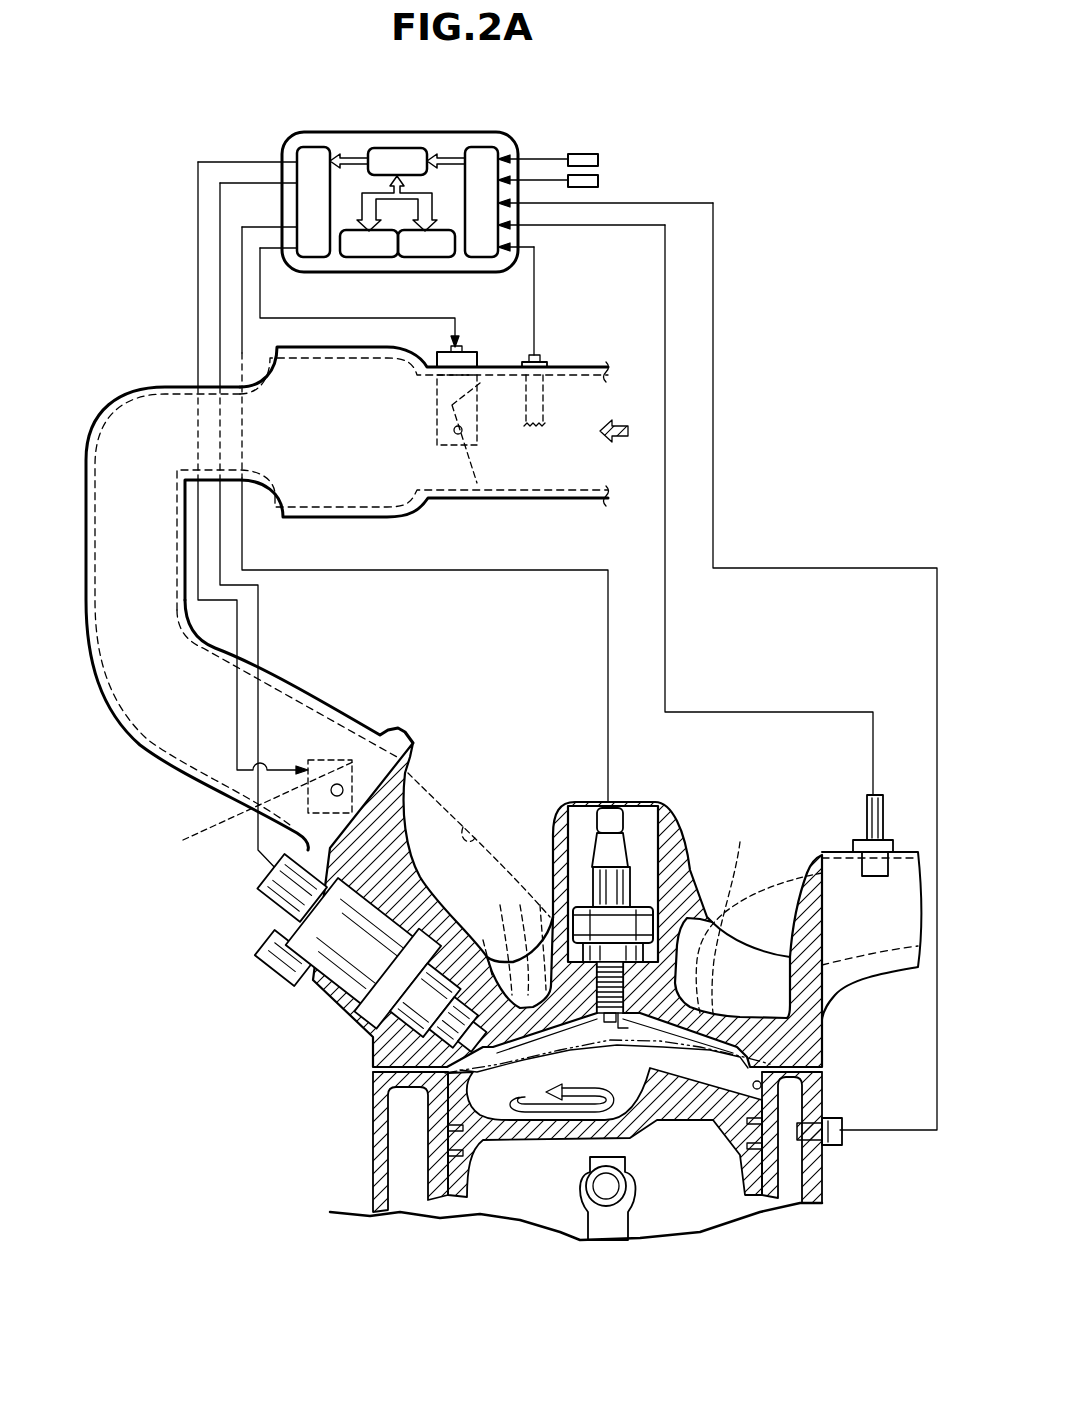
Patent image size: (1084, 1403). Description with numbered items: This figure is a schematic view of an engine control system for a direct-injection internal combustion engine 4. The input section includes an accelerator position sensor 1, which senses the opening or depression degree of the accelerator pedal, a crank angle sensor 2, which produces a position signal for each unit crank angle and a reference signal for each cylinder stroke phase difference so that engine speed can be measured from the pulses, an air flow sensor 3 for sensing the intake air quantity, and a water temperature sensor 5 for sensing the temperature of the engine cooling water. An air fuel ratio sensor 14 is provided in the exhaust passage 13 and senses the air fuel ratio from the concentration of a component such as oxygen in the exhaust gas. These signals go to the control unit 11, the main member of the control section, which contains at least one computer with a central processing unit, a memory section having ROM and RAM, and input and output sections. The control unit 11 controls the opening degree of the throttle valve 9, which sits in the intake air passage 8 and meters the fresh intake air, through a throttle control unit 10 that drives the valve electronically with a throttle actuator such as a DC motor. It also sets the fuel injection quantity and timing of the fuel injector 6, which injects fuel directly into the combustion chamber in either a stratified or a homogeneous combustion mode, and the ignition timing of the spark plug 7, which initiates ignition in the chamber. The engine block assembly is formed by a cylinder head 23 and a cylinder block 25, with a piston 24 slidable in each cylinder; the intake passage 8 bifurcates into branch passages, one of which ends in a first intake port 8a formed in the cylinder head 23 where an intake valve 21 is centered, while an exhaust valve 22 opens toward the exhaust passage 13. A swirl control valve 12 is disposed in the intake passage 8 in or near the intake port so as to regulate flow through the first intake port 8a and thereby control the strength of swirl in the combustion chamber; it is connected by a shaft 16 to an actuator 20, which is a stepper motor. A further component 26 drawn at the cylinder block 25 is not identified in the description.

The accelerator position sensor 1 is at (598, 160).
The crank angle sensor 2 is at (598, 181).
The air flow sensor 3 is at (548, 388).
The internal combustion engine 4 is at (360, 1166).
The water temperature sensor 5 is at (840, 1137).
The fuel injector 6 is at (327, 997).
The spark plug 7 is at (614, 808).
The intake air passage 8 is at (280, 700).
The first intake port 8a is at (467, 823).
The throttle valve 9 is at (470, 400).
The throttle control unit 10 is at (466, 357).
The control unit 11 is at (463, 133).
The swirl control valve 12 is at (353, 760).
The exhaust passage 13 is at (805, 882).
The air fuel ratio sensor 14 is at (872, 815).
The shaft 16 is at (330, 783).
The actuator 20 is at (248, 809).
The intake valve 21 is at (507, 943).
The exhaust valve 22 is at (730, 923).
The cylinder head 23 is at (817, 942).
The piston 24 is at (523, 1143).
The cylinder block 25 is at (823, 1195).
The cooling water passage 26 is at (761, 1085).